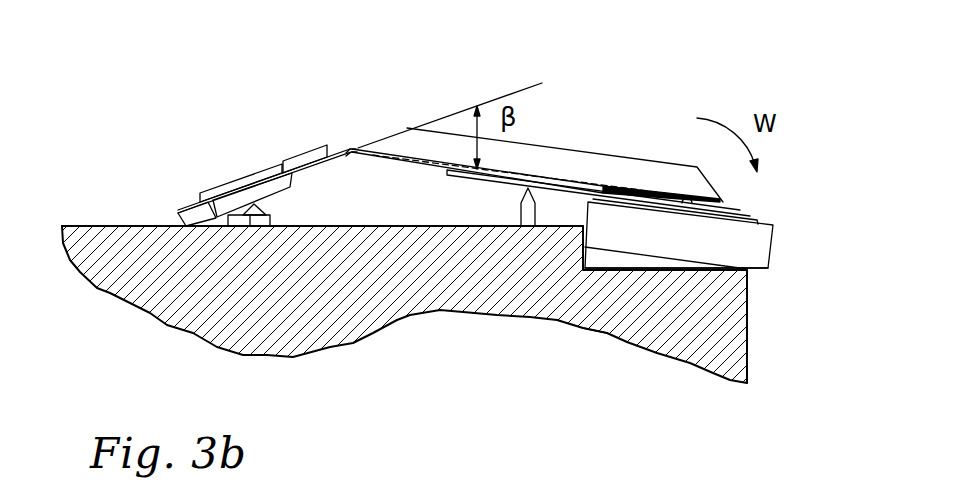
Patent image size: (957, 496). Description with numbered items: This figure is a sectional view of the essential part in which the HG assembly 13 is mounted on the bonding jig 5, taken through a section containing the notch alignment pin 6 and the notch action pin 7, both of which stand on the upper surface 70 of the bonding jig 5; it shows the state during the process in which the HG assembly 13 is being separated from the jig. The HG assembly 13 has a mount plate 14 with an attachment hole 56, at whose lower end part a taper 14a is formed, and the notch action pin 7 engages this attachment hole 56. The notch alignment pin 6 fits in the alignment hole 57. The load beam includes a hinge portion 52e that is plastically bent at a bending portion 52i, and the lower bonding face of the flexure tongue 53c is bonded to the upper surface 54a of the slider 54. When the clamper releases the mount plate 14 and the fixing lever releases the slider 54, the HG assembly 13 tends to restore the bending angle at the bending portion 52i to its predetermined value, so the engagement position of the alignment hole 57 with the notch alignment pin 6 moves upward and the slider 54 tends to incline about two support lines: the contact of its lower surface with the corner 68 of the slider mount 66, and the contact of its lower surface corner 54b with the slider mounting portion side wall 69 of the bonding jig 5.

The bonding jig 5 is at (405, 385).
The notch alignment pin 6 is at (522, 214).
The notch action pin 7 is at (272, 216).
The HG assembly 13 is at (560, 100).
The mount plate 14 is at (185, 210).
The taper 14a is at (214, 228).
The bending portion 52i is at (350, 147).
The hinge portion 52e is at (352, 156).
The flexure tongue 53c is at (746, 210).
The slider 54 is at (760, 247).
The upper surface of the slider 54a is at (767, 222).
The lower surface corner of the slider 54b is at (590, 262).
The attachment hole 56 is at (253, 174).
The alignment hole 57 is at (537, 175).
The slider mount 66 is at (676, 266).
The corner of the slider mount 68 is at (752, 271).
The slider mounting portion side wall 69 is at (587, 328).
The upper surface of the bonding jig 70 is at (362, 222).